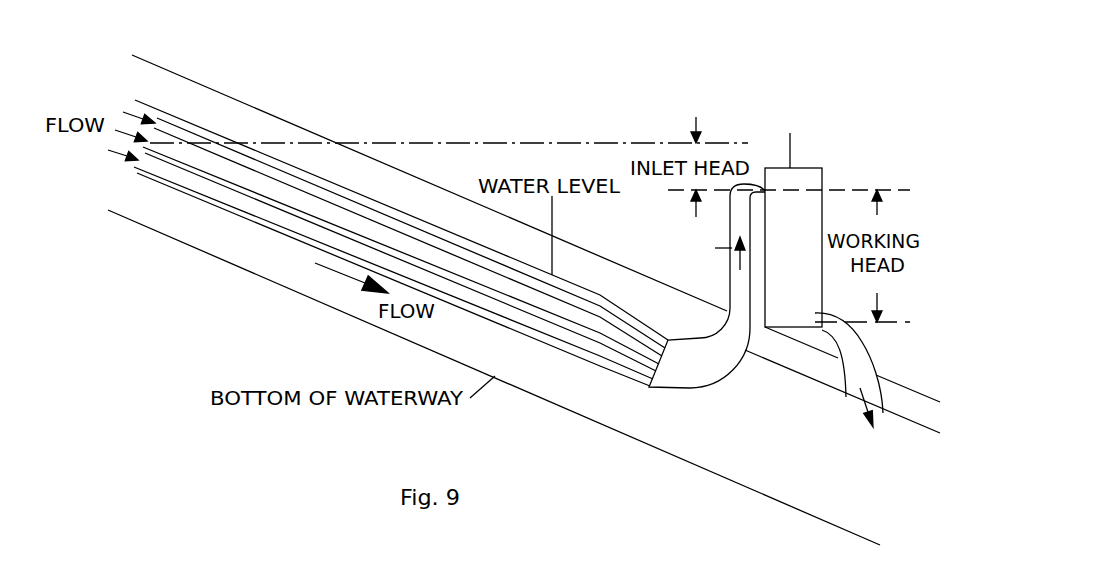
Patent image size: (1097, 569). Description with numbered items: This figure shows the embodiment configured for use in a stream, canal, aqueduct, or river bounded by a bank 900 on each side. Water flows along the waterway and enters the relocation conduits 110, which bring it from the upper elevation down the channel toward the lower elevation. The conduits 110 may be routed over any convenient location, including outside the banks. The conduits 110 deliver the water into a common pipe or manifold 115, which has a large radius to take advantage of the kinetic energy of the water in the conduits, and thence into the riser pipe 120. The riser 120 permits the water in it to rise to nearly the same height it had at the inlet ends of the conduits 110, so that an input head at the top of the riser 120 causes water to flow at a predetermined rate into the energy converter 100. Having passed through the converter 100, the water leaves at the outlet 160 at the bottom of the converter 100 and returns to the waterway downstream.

The bank 900 is at (227, 95).
The relocation conduits 110 is at (263, 174).
The energy converter 100 is at (800, 168).
The riser pipe 120 is at (730, 278).
The manifold 115 is at (673, 389).
The outlet 160 is at (822, 330).